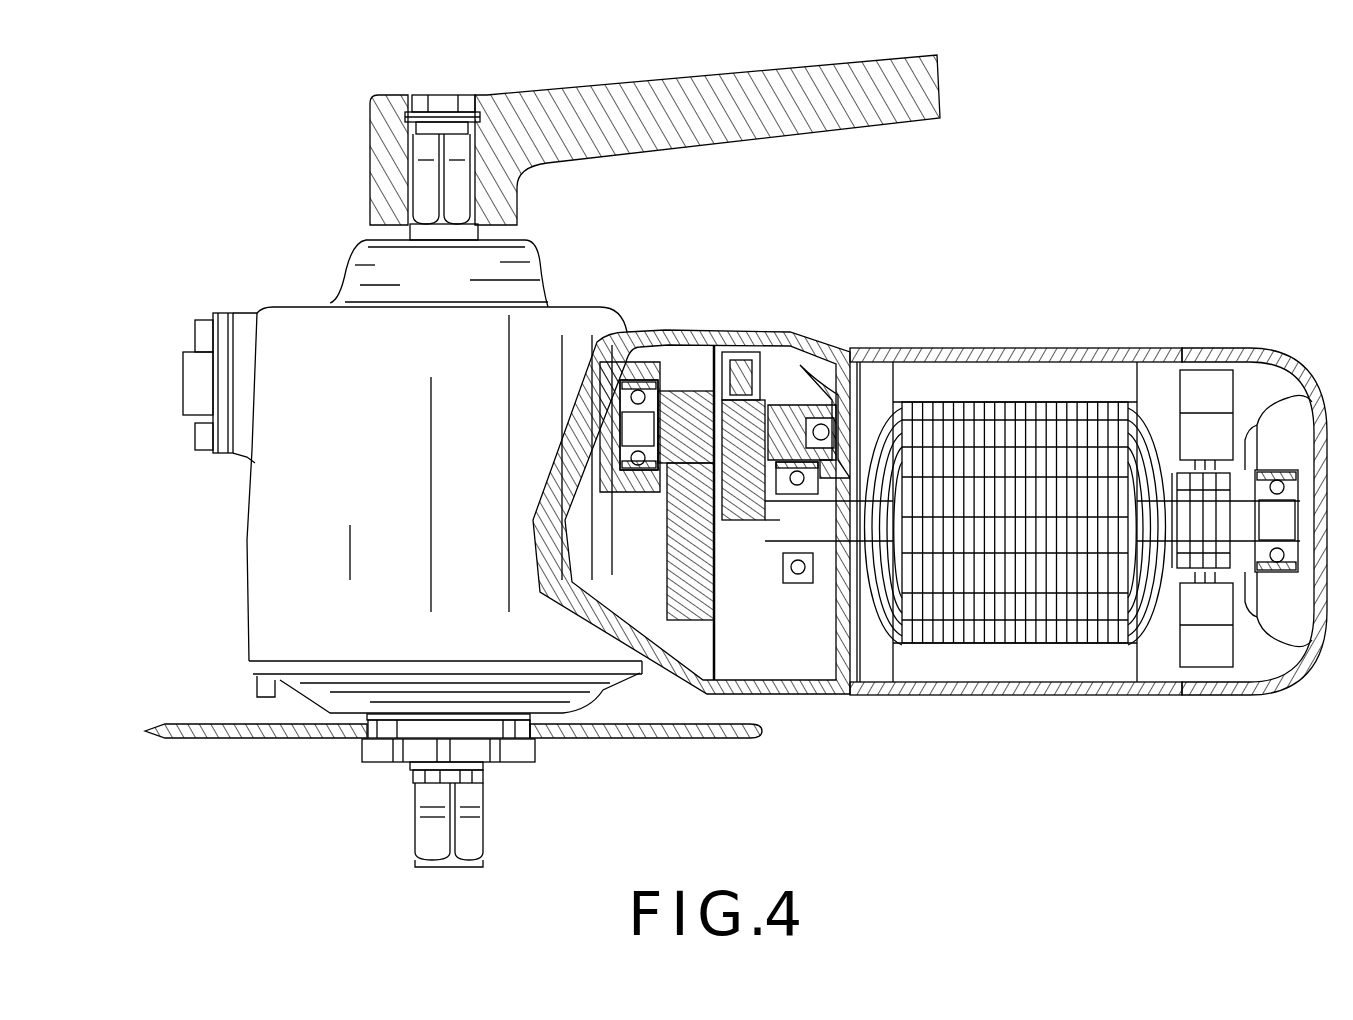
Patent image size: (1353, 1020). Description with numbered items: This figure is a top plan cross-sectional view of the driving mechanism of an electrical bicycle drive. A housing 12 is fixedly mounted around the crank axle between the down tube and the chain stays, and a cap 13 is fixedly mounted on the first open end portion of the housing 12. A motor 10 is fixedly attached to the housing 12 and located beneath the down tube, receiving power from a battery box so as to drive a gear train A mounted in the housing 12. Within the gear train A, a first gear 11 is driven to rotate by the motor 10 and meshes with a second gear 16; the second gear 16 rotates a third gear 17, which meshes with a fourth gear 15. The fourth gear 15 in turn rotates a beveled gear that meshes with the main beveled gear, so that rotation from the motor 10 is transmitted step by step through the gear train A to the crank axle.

The motor 10 is at (1029, 385).
The first gear 11 is at (752, 519).
The housing 12 is at (273, 572).
The cap 13 is at (583, 683).
The fourth gear 15 is at (677, 553).
The second gear 16 is at (742, 358).
The third gear 17 is at (680, 400).
The gear train A is at (752, 648).